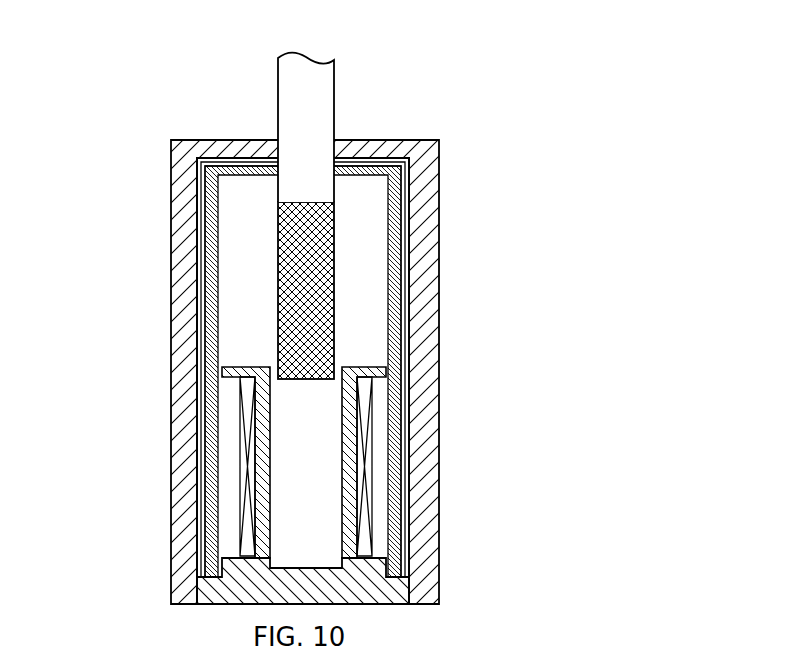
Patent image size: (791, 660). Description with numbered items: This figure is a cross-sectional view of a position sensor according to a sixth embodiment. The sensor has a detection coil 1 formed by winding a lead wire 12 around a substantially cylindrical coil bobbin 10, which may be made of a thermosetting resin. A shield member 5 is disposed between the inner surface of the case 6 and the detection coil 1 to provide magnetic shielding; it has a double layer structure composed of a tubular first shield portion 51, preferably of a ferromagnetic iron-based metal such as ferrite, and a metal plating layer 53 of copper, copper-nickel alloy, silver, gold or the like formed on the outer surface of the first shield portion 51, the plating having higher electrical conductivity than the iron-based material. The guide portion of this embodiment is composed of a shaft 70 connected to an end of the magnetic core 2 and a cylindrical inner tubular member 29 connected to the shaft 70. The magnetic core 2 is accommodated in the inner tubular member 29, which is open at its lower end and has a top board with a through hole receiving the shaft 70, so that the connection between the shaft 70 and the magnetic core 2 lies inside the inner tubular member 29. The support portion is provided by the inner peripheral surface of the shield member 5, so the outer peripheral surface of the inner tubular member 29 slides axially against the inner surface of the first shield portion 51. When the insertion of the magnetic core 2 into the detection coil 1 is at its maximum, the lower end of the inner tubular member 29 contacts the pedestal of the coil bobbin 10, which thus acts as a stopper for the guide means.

The shaft 70 is at (315, 113).
The magnetic core 2 is at (331, 232).
The inner tubular member 29 is at (207, 235).
The first shield portion 51 is at (407, 258).
The metal plating layer 53 is at (409, 290).
The shield member 5 is at (406, 320).
The case 6 is at (425, 387).
The lead wire 12 is at (368, 460).
The detection coil 1 is at (373, 478).
The coil bobbin 10 is at (368, 570).